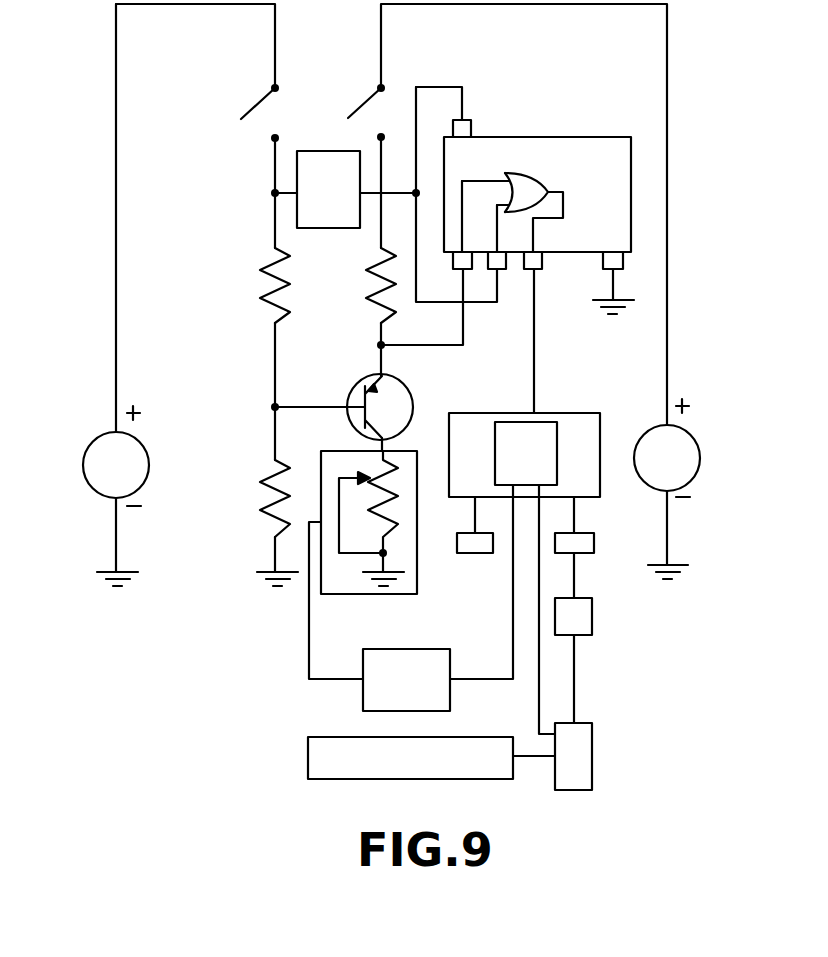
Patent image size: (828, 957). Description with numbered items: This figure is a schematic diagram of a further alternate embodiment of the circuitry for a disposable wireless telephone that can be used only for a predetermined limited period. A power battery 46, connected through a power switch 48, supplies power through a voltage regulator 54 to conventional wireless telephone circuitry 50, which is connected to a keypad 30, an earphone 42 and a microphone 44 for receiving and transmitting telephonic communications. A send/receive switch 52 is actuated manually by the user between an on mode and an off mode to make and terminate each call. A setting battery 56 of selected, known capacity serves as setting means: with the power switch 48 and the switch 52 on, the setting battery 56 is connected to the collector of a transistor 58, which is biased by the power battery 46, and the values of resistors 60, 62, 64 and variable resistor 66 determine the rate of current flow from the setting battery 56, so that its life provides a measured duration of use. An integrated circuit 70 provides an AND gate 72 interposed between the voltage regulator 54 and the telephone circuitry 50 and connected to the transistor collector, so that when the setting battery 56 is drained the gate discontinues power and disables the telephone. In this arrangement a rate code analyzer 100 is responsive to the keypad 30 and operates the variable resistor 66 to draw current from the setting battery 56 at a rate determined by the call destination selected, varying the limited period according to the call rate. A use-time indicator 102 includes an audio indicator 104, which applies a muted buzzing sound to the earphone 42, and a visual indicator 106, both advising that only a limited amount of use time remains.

The keypad 30 is at (526, 453).
The earphone 42 is at (580, 533).
The microphone 44 is at (472, 553).
The power battery 46 is at (116, 465).
The power switch 48 is at (260, 103).
The wireless telephone circuitry 50 is at (573, 413).
The send/receive switch 52 is at (368, 103).
The voltage regulator 54 is at (328, 189).
The setting battery 56 is at (667, 458).
The transistor 58 is at (405, 386).
The resistor 60 is at (263, 267).
The resistor 62 is at (268, 476).
The resistor 64 is at (368, 292).
The variable resistor 66 is at (338, 451).
The integrated circuit 70 is at (537, 194).
The AND gate 72 is at (527, 178).
The rate code analyzer 100 is at (406, 680).
The use-time indicator 102 is at (594, 745).
The audio indicator 104 is at (585, 637).
The visual indicator 106 is at (308, 746).